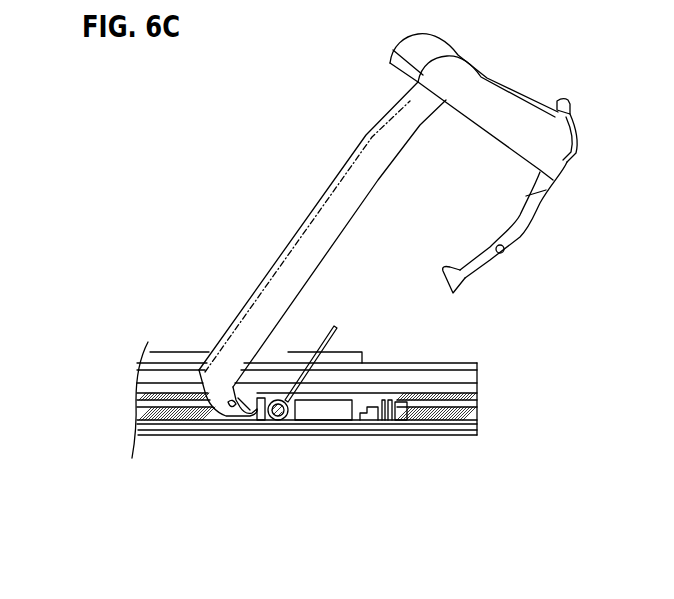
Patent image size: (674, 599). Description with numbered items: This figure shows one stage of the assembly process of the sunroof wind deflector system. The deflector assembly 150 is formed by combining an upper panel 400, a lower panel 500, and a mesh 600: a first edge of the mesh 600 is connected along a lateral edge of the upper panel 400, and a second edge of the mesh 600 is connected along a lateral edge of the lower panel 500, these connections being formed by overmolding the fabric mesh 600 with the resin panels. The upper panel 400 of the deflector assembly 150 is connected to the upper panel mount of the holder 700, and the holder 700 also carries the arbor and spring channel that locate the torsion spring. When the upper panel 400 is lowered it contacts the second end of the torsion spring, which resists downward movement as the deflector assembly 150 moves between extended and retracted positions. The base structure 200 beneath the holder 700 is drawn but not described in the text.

The deflector assembly 150 is at (585, 73).
The base housing 200 is at (463, 365).
The upper panel 400 is at (317, 210).
The lower panel 500 is at (539, 215).
The mesh 600 is at (528, 100).
The holder 700 is at (208, 440).